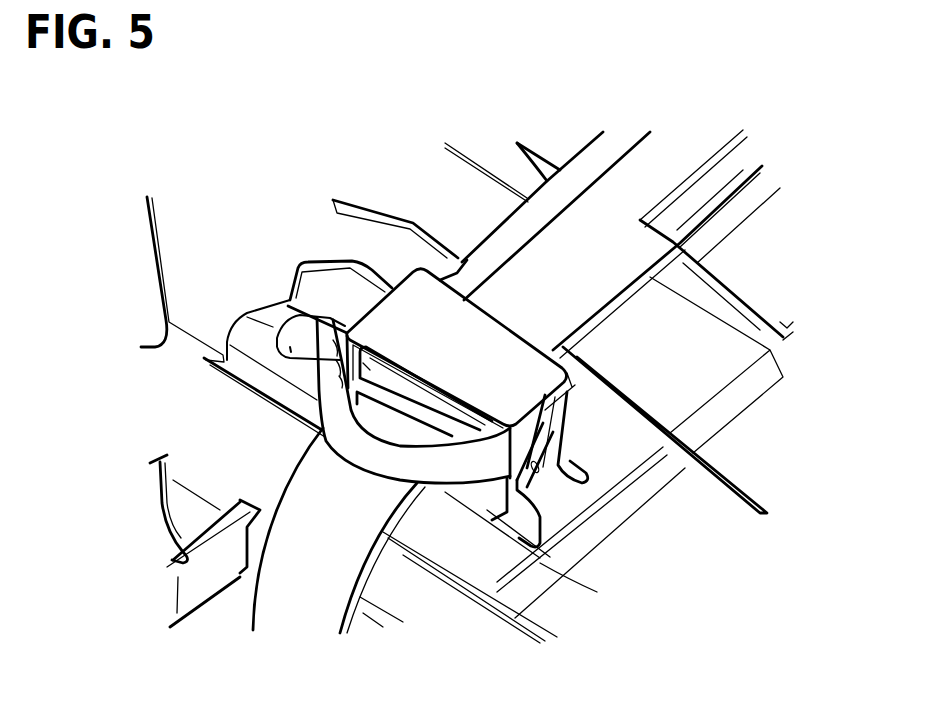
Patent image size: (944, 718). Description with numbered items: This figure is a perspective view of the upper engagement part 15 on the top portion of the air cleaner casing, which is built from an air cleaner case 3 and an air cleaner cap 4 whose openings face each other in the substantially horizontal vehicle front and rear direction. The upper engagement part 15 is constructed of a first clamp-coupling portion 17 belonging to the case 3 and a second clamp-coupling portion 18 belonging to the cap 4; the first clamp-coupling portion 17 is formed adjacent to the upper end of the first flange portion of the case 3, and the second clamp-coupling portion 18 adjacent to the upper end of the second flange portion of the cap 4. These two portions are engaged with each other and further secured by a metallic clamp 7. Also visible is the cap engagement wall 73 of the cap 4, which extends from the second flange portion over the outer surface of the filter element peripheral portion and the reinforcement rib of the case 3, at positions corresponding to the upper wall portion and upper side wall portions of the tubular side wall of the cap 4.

The upper engagement part 15 is at (263, 238).
The first clamp-coupling portion 17 is at (330, 263).
The metallic clamp 7 is at (437, 478).
The second clamp-coupling portion 18 is at (562, 410).
The air cleaner case 3 is at (573, 178).
The cap engagement wall 73 is at (537, 278).
The air cleaner cap 4 is at (700, 370).